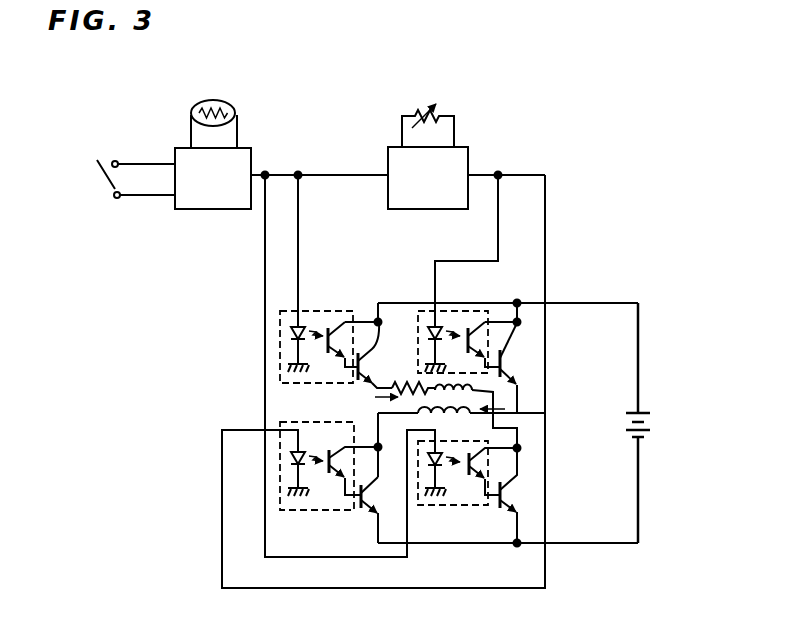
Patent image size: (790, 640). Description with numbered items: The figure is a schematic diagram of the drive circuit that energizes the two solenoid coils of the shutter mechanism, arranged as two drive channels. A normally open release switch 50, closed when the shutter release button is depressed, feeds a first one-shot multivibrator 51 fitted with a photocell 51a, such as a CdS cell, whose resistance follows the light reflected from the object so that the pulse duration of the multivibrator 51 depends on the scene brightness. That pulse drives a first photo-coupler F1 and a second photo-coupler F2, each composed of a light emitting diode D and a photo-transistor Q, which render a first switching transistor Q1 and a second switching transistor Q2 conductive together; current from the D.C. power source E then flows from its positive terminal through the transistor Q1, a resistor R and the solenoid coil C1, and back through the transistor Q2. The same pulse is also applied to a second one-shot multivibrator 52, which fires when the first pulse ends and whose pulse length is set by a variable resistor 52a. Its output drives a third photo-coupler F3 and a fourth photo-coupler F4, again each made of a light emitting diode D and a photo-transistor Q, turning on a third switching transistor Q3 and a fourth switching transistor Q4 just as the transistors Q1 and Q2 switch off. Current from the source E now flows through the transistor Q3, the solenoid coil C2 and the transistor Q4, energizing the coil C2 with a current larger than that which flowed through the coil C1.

The release switch 50 is at (103, 168).
The first one-shot multivibrator 51 is at (197, 210).
The photocell 51a is at (226, 104).
The second one-shot multivibrator 52 is at (463, 155).
The variable resistor 52a is at (440, 103).
The light emitting diode D is at (296, 326).
The photo-transistor Q is at (333, 330).
The first switching transistor Q1 is at (383, 346).
The second switching transistor Q2 is at (512, 492).
The third switching transistor Q3 is at (512, 362).
The fourth switching transistor Q4 is at (365, 506).
The resistor R is at (402, 386).
The solenoid coil C1 is at (480, 383).
The solenoid coil C2 is at (456, 421).
The D.C. power source E is at (653, 427).
The first photo-coupler F1 is at (280, 351).
The second photo-coupler F2 is at (485, 506).
The third photo-coupler F3 is at (418, 327).
The fourth photo-coupler F4 is at (280, 463).